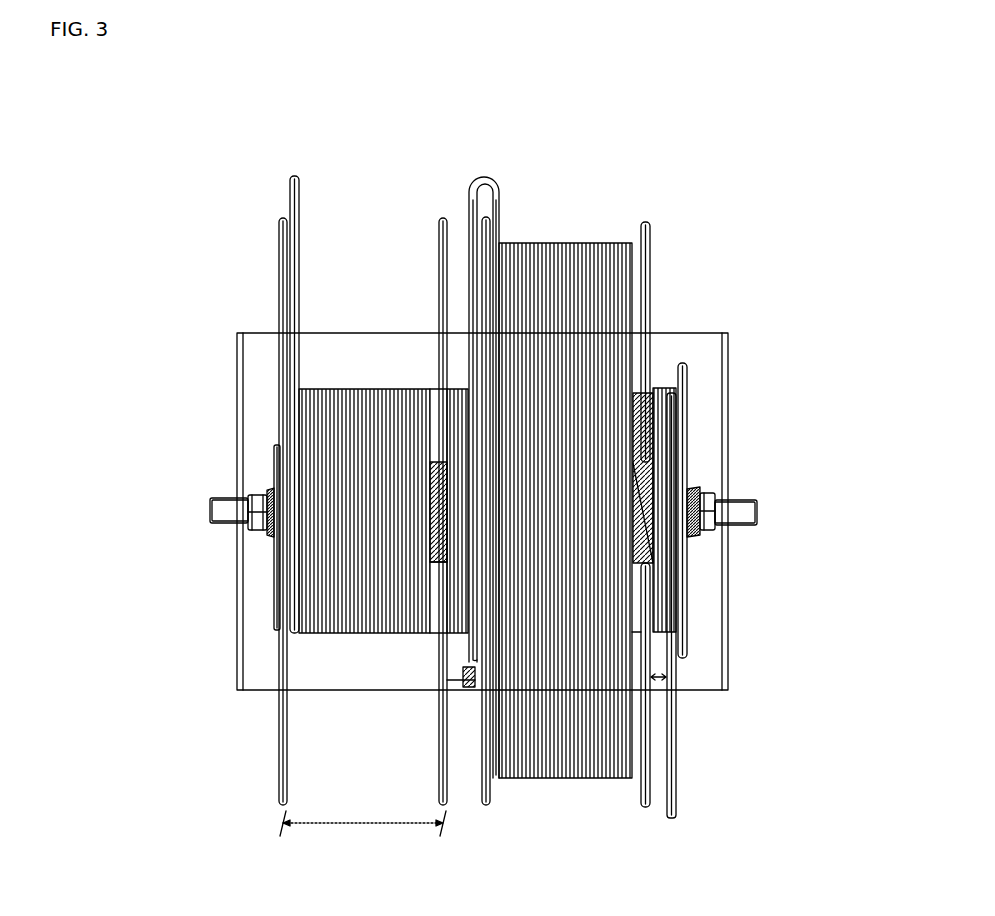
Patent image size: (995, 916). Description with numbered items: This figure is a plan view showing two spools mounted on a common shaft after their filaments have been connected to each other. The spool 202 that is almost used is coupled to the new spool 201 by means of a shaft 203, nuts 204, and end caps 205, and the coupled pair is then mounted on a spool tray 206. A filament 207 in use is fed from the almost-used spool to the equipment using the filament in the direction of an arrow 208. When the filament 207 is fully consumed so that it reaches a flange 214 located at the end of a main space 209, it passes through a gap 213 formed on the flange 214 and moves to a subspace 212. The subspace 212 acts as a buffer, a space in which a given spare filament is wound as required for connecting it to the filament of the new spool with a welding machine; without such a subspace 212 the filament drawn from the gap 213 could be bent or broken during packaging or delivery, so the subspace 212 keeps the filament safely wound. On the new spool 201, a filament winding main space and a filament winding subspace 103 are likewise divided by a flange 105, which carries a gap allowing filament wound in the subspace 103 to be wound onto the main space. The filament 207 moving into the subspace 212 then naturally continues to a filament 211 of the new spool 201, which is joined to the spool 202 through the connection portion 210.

The filament winding subspace 103 is at (662, 684).
The flange 105 is at (642, 218).
The new spool 201 is at (661, 237).
The spool almost used 202 is at (421, 255).
The shaft 203 is at (210, 506).
The nuts 204 is at (238, 535).
The end caps 205 is at (277, 575).
The spool tray 206 is at (730, 658).
The filament in use 207 is at (288, 196).
The arrow 208 is at (296, 129).
The main space 209 is at (333, 823).
The connection portion 210 is at (485, 178).
The filament of the new spool 211 is at (500, 213).
The subspace 212 is at (470, 696).
The gap 213 is at (443, 560).
The flange 214 is at (441, 218).